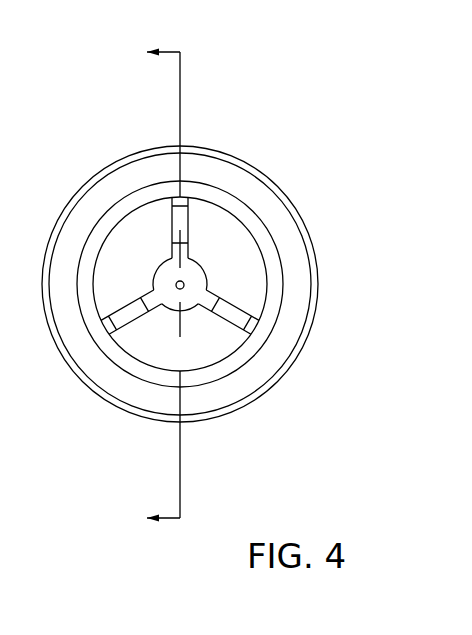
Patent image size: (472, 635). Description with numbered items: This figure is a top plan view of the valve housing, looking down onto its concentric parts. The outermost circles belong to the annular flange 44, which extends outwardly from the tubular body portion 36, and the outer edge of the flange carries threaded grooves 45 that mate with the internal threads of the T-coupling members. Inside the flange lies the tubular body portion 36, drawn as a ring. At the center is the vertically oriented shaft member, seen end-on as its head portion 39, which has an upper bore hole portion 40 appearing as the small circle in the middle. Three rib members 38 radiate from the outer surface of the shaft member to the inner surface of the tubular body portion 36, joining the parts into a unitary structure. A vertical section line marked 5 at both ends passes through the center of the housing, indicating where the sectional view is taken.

The section line 5- 5 is at (165, 286).
The tubular body portion 36 is at (275, 270).
The rib members 38 is at (135, 323).
The head portion 39 is at (193, 278).
The upper bore hole portion 40 is at (185, 289).
The annular flange 44 is at (247, 188).
The threaded grooves 45 is at (293, 367).